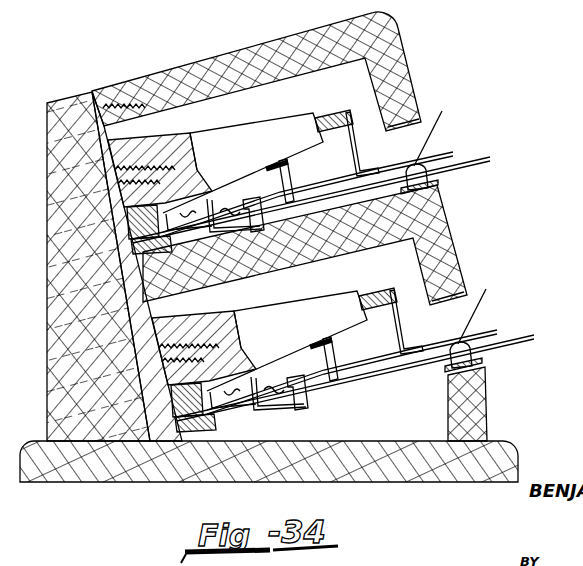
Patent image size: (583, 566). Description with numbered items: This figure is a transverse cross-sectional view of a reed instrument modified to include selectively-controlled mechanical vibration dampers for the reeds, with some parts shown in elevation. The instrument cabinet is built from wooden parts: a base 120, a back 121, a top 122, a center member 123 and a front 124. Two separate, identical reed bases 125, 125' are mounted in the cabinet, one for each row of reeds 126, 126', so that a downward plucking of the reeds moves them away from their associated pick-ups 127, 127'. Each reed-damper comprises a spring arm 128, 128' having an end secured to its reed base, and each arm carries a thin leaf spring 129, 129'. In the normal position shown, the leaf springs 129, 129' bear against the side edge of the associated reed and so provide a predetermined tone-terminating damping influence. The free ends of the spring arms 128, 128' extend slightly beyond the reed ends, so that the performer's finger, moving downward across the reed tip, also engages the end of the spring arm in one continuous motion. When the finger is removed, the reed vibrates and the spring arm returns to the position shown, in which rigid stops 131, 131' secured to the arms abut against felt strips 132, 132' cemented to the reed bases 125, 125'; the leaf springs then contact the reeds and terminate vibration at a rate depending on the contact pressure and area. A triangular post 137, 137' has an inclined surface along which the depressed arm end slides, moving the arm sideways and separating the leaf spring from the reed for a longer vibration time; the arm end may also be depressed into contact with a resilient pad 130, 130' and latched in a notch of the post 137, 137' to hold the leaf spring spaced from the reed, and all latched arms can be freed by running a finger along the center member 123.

The base 120 is at (343, 448).
The back 121 is at (72, 100).
The top 122 is at (185, 72).
The center member 123 is at (438, 224).
The front 124 is at (484, 395).
The reed base 125 is at (243, 156).
The reed 126 is at (441, 128).
The pick-up 127 is at (360, 143).
The spring arm 128 is at (346, 178).
The leaf spring 129 is at (234, 194).
The resilient pad 130 is at (323, 200).
The rigid stop 131 is at (293, 195).
The felt strip 132 is at (284, 150).
The triangular post 137 is at (440, 155).
The reed base 125' is at (287, 330).
The reed 126' is at (489, 309).
The pick-up 127' is at (409, 321).
The spring arm 128' is at (393, 357).
The leaf spring 129' is at (278, 374).
The resilient pad 130' is at (368, 378).
The rigid stop 131' is at (342, 372).
The felt strip 132' is at (328, 328).
The triangular post 137' is at (488, 334).